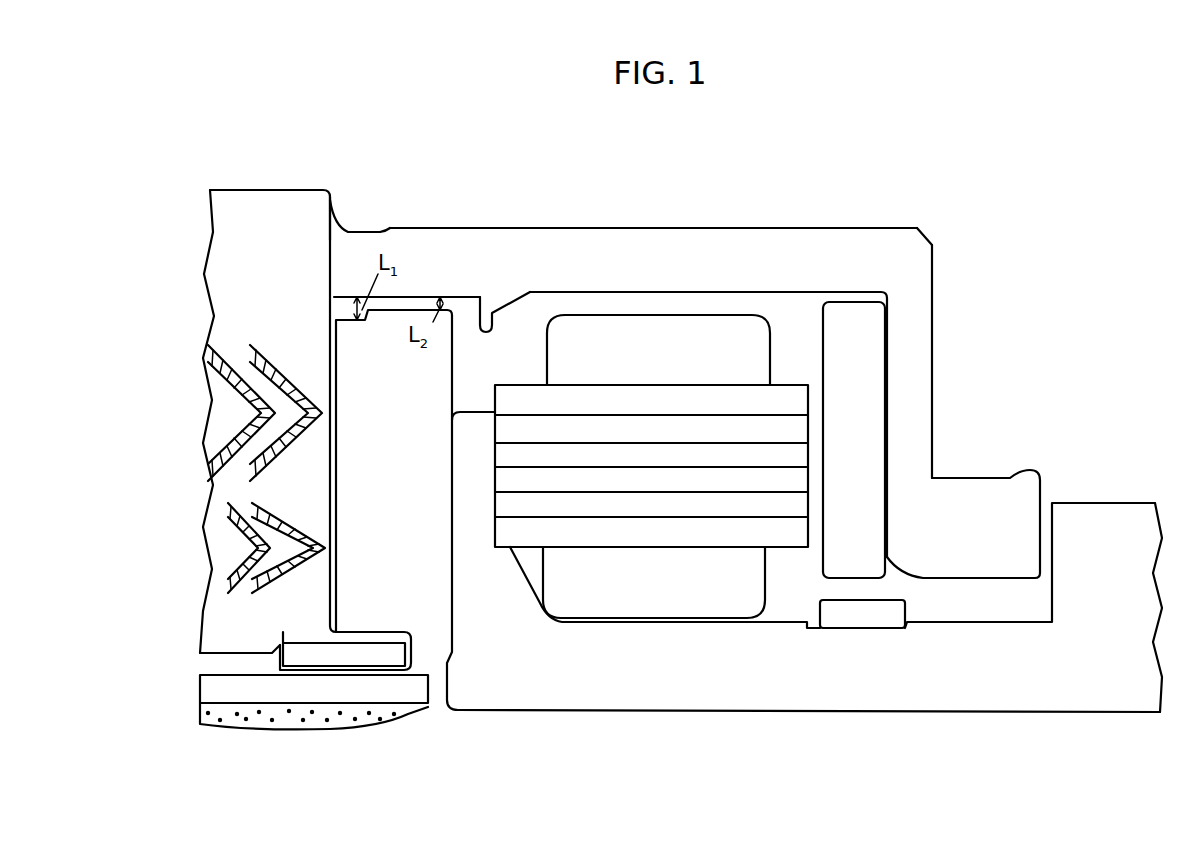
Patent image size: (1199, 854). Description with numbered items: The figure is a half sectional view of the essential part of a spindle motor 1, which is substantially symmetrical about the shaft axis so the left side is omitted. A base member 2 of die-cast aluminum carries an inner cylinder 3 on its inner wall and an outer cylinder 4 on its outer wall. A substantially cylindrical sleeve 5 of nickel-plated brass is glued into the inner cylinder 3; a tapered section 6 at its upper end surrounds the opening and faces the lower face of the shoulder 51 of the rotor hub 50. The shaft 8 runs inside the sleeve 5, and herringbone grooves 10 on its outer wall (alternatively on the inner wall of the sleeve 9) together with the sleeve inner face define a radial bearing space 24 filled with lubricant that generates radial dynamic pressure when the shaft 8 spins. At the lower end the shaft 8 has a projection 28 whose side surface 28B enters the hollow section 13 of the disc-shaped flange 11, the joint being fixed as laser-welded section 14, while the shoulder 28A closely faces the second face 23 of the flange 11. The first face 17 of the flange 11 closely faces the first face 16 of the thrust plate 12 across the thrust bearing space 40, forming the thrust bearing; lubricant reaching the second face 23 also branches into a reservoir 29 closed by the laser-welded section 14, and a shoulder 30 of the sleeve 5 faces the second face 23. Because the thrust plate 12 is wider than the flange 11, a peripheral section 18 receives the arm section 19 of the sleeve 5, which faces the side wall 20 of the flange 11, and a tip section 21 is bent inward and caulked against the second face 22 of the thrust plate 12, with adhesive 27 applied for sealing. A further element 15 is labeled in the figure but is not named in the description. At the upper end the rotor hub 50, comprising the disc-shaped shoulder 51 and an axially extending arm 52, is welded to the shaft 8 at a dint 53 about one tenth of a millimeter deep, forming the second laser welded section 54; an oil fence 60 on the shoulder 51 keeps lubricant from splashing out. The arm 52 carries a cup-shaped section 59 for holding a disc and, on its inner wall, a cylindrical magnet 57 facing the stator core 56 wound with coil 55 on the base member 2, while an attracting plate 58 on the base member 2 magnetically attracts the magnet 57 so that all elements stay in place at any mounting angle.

The spindle motor 1 is at (634, 139).
The base member 2 is at (745, 685).
The inner cylinder 3 is at (477, 450).
The outer cylinder 4 is at (1100, 550).
The sleeve 5 is at (438, 645).
The tapered section 6 is at (425, 318).
The shaft 8 is at (268, 190).
The sleeve 9 is at (330, 350).
The herringbone grooves 10 is at (240, 420).
The flange 11 is at (320, 655).
The thrust plate 12 is at (215, 688).
The hollow section 13 is at (207, 660).
The laser-welded section 14 is at (275, 657).
The dynamic pressure generating grooves 15 is at (312, 498).
The first face 16 is at (217, 675).
The first face 17 is at (367, 667).
The peripheral section 18 is at (405, 690).
The arm section 19 is at (427, 568).
The side wall 20 is at (408, 652).
The tip section 21 is at (415, 678).
The second face 22 is at (200, 713).
The second face 23 is at (293, 638).
The radial bearing space 24 is at (255, 460).
The adhesive 27 is at (225, 710).
The projection 28 is at (285, 645).
The shoulder 28A is at (300, 643).
The side surface 28B is at (285, 630).
The reservoir 29 is at (307, 638).
The shoulder 30 is at (255, 555).
The thrust bearing space 40 is at (355, 673).
The rotor hub 50 is at (880, 226).
The shoulder 51 is at (612, 246).
The arm 52 is at (917, 343).
The dint 53 is at (372, 230).
The second laser welded section 54 is at (342, 216).
The coil 55 is at (668, 335).
The stator core 56 is at (772, 400).
The cylindrical magnet 57 is at (863, 453).
The attracting plate 58 is at (862, 620).
The cup-shaped section 59 is at (1030, 468).
The oil fence 60 is at (492, 308).